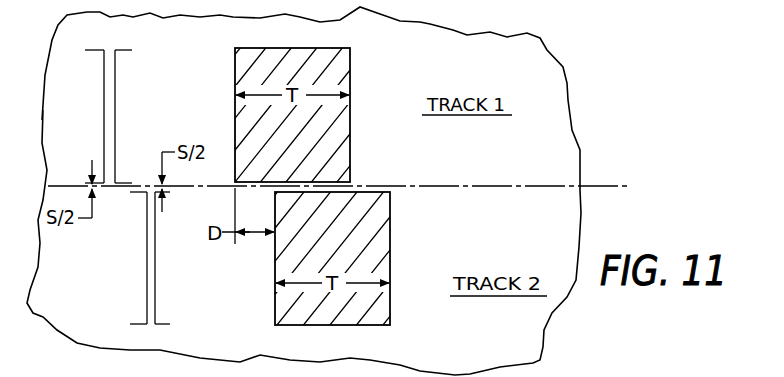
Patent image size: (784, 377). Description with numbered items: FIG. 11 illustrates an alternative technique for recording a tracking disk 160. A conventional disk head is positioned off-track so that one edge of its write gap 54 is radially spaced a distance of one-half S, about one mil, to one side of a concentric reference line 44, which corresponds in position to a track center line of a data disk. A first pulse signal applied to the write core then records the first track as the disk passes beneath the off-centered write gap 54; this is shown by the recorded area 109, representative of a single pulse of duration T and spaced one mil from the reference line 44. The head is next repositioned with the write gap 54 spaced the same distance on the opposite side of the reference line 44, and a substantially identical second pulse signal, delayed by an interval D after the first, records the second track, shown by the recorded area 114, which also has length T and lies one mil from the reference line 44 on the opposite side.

The tracking disk 160 is at (548, 73).
The reference line 44 is at (496, 186).
The recorded area 109 is at (338, 62).
The recorded area 114 is at (380, 235).
The write gap 54 is at (110, 77).